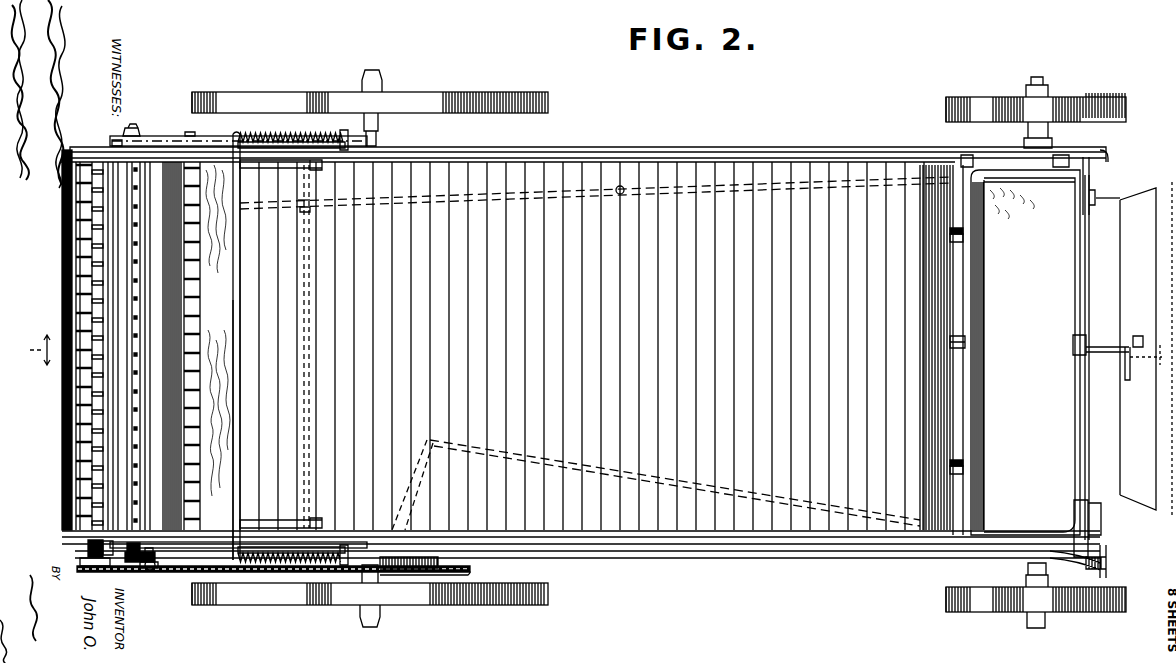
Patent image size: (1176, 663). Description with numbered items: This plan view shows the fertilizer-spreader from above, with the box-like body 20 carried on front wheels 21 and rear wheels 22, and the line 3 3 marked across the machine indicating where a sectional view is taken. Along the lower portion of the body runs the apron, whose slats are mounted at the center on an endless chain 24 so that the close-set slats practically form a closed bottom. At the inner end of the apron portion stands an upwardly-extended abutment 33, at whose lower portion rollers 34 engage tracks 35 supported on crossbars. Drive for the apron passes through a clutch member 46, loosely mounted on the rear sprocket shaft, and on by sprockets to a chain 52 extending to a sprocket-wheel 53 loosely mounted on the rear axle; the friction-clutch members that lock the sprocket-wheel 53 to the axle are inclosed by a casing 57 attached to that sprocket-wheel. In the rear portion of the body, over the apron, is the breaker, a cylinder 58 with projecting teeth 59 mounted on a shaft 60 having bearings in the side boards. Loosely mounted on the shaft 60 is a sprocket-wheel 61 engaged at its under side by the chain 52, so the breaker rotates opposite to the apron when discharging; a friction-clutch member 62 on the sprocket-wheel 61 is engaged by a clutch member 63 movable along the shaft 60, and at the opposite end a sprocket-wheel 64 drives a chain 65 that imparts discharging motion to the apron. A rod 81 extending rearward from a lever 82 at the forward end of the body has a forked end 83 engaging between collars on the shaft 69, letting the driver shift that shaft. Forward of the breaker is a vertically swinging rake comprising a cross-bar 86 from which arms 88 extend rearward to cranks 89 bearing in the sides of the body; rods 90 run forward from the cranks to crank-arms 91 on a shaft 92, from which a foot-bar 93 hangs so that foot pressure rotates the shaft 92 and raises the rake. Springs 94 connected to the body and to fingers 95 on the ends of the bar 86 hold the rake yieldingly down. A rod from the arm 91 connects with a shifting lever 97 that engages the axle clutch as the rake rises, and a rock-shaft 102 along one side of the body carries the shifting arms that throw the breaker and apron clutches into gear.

The section line 3- 3 is at (31, 350).
The box-like body 20 is at (700, 160).
The front wheels 21 is at (950, 612).
The rear wheels 22 is at (499, 612).
The endless chain 24 is at (962, 343).
The upwardly-extended abutment 33 is at (921, 362).
The rollers 34 is at (962, 232).
The tracks 35 is at (962, 238).
The clutch member 46 is at (80, 548).
The chain 52 is at (190, 575).
The sprocket-wheel 53 is at (472, 572).
The casing 57 is at (440, 563).
The cylinder 58 is at (279, 520).
The projecting teeth 59 is at (90, 462).
The shaft 60 is at (134, 128).
The sprocket-wheel 61 is at (152, 570).
The friction-clutch member 62 is at (143, 563).
The clutch member 63 is at (157, 565).
The sprocket-wheel 64 is at (148, 136).
The chain 65 is at (188, 136).
The shaft 69 is at (306, 271).
The rod 81 is at (654, 194).
The lever 82 is at (1090, 180).
The forked end 83 is at (307, 209).
The cross-bar 86 is at (234, 432).
The arms 88 is at (304, 204).
The cranks 89 is at (322, 165).
The rods 90 is at (663, 147).
The crank-arms 91 is at (1104, 158).
The shaft 92 is at (1083, 404).
The foot-bar 93 is at (1143, 337).
The springs 94 is at (287, 132).
The fingers 95 is at (233, 135).
The shifting lever 97 is at (410, 492).
The rock-shaft 102 is at (182, 549).